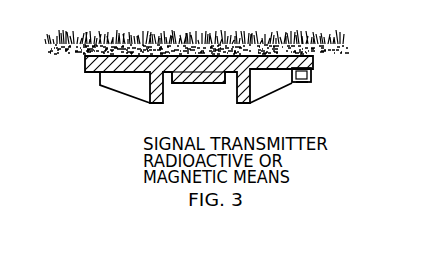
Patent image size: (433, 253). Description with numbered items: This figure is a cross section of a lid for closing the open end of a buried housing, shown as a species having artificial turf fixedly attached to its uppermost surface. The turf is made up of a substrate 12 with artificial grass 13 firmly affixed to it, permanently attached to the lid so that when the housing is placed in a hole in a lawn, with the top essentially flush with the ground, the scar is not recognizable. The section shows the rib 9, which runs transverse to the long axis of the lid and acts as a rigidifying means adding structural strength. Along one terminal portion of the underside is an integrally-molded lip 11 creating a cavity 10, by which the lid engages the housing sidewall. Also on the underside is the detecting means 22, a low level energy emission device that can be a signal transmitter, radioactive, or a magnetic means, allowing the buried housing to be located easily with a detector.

The rib 9 is at (119, 86).
The cavity 10 is at (313, 73).
The lip 11 is at (301, 82).
The substrate 12 is at (347, 47).
The artificial grass 13 is at (330, 33).
The detecting means 22 is at (194, 89).